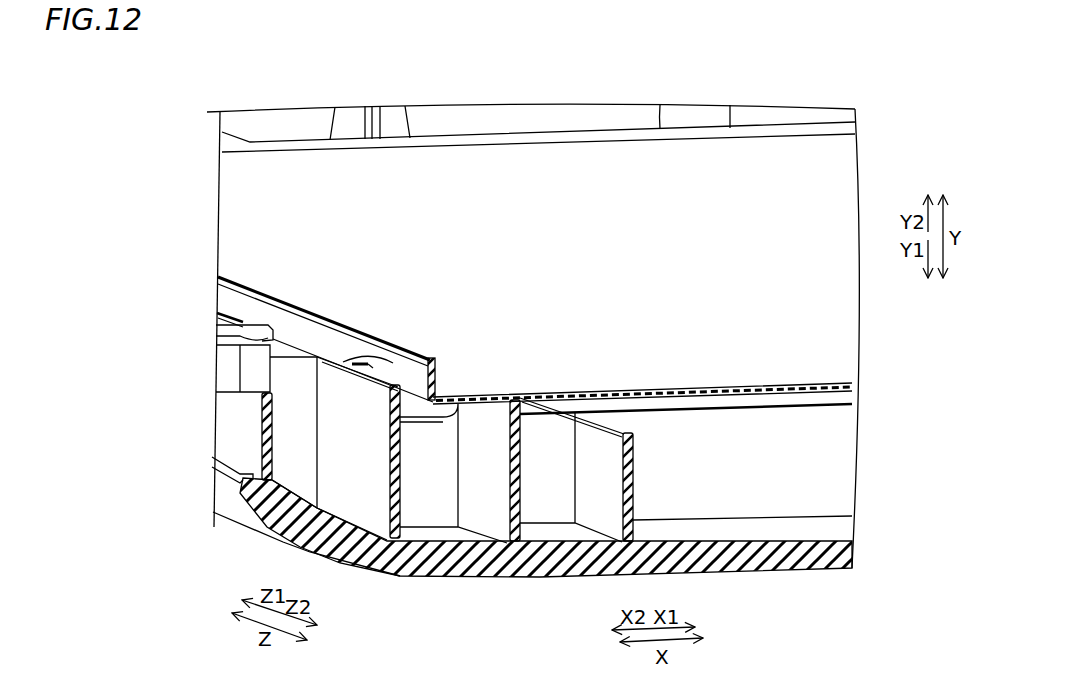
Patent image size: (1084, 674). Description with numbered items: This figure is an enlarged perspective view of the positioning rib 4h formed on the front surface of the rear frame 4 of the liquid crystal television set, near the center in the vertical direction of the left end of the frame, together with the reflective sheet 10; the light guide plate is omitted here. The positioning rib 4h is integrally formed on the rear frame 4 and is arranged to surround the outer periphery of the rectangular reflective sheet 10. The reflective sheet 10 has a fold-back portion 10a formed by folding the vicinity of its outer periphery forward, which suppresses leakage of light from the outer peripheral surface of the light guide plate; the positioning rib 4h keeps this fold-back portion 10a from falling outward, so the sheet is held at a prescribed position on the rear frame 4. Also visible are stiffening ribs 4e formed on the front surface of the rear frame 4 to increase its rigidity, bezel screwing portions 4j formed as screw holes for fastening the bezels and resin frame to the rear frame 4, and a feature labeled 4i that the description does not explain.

The reflective sheet 10 is at (243, 210).
The fold-back portion 10a is at (317, 358).
The rear frame 4 is at (243, 513).
The stiffening ribs 4e is at (598, 487).
The positioning rib 4h is at (333, 358).
The rib 4i is at (357, 125).
The bezel screwing portions 4j is at (222, 330).